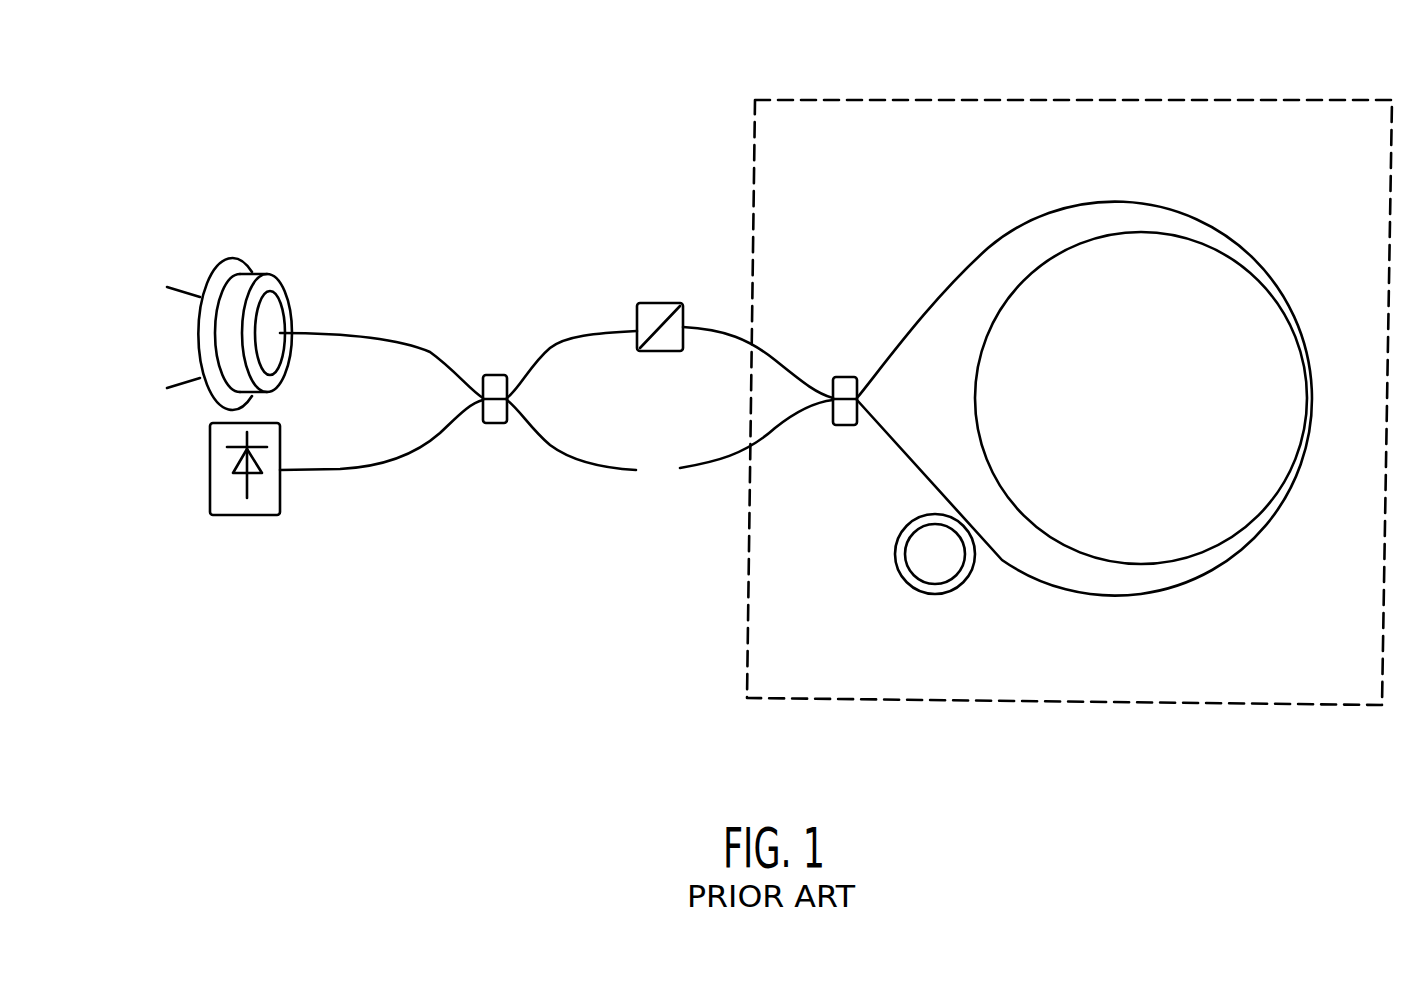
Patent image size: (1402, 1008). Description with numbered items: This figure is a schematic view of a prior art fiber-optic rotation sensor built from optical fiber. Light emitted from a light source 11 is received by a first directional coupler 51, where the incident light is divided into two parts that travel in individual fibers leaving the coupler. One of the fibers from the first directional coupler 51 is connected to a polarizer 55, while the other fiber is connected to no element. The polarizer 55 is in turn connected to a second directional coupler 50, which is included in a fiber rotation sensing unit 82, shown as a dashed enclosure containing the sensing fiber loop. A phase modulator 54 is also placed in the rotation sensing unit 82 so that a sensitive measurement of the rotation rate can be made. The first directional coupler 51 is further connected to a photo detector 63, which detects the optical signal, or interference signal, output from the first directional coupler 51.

The light source 11 is at (233, 265).
The first directional coupler 51 is at (495, 375).
The polarizer 55 is at (660, 302).
The second directional coupler 50 is at (840, 377).
The fiber rotation sensing unit 82 is at (1115, 135).
The phase modulator 54 is at (917, 585).
The photo detector 63 is at (238, 515).